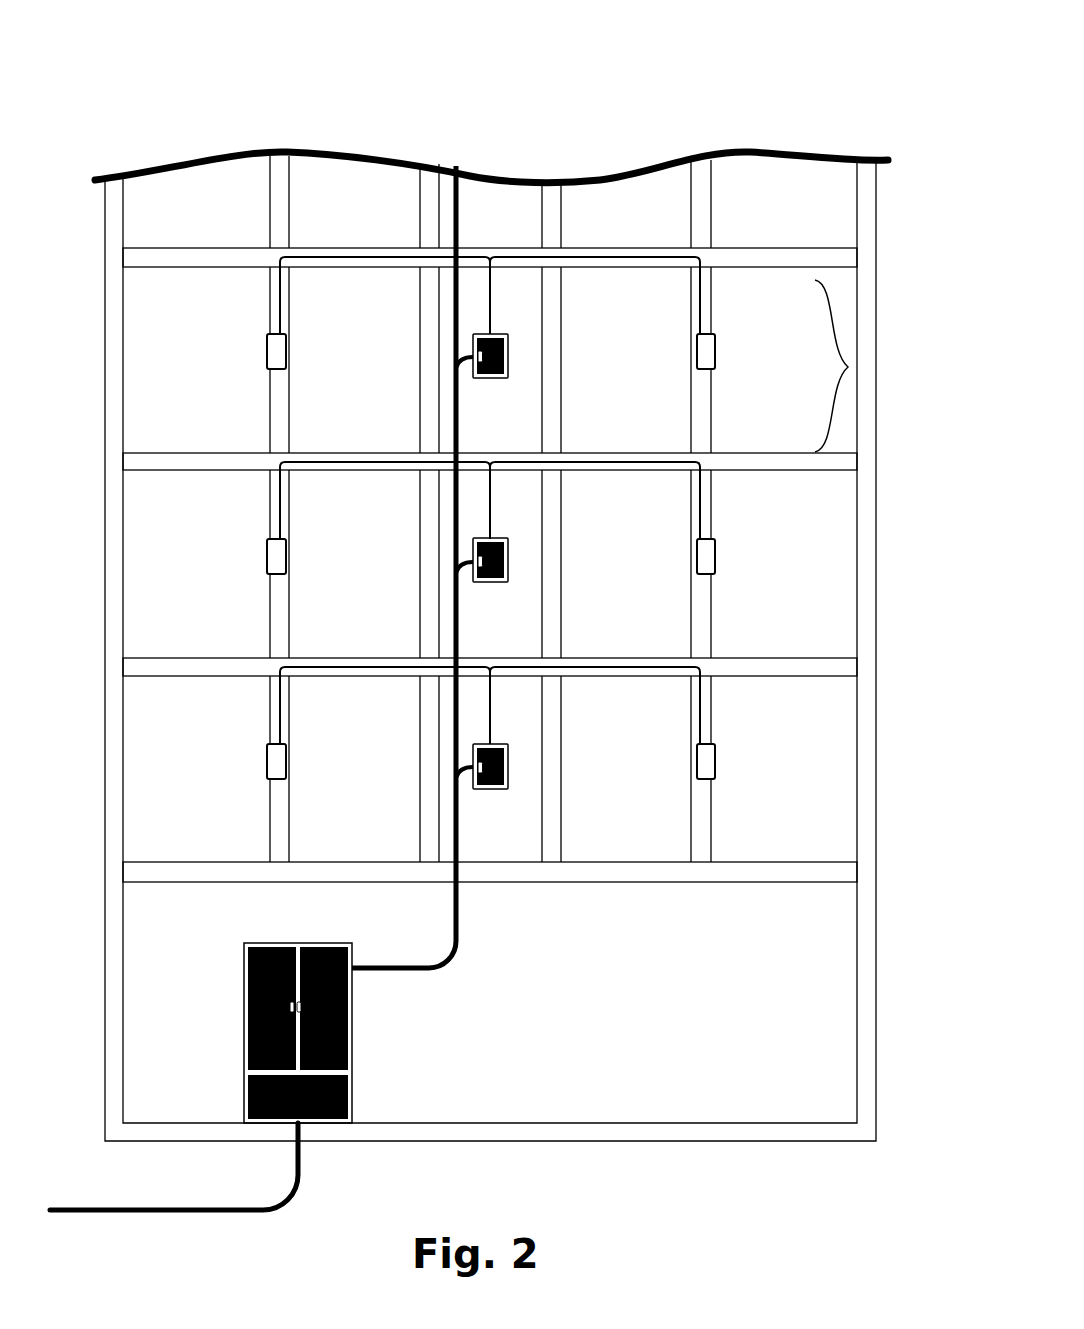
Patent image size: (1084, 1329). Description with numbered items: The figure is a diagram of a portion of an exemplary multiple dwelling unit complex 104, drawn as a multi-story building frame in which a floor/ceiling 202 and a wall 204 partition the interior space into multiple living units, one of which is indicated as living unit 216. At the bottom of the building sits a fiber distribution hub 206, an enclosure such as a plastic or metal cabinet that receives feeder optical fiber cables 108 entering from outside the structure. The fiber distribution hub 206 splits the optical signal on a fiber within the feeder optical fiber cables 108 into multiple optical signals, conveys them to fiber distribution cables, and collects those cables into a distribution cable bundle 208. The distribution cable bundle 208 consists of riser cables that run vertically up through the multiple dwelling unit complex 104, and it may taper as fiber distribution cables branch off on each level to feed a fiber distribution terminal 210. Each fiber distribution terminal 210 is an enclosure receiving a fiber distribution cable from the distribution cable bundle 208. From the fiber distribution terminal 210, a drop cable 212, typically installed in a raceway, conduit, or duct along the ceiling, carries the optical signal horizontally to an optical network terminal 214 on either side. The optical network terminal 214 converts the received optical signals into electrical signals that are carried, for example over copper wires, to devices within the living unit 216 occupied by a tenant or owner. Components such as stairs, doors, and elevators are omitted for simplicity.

The multiple dwelling unit complex 104 is at (524, 94).
The feeder optical fiber cables 108 is at (175, 1210).
The floor/ceiling 202 is at (840, 255).
The wall 204 is at (867, 195).
The fiber distribution hub 206 is at (273, 968).
The distribution cable bundle 208 is at (455, 420).
The fiber distribution terminal 210 is at (490, 355).
The drop cable 212 is at (630, 257).
The optical network terminal 214 is at (705, 352).
The living unit 216 is at (848, 367).